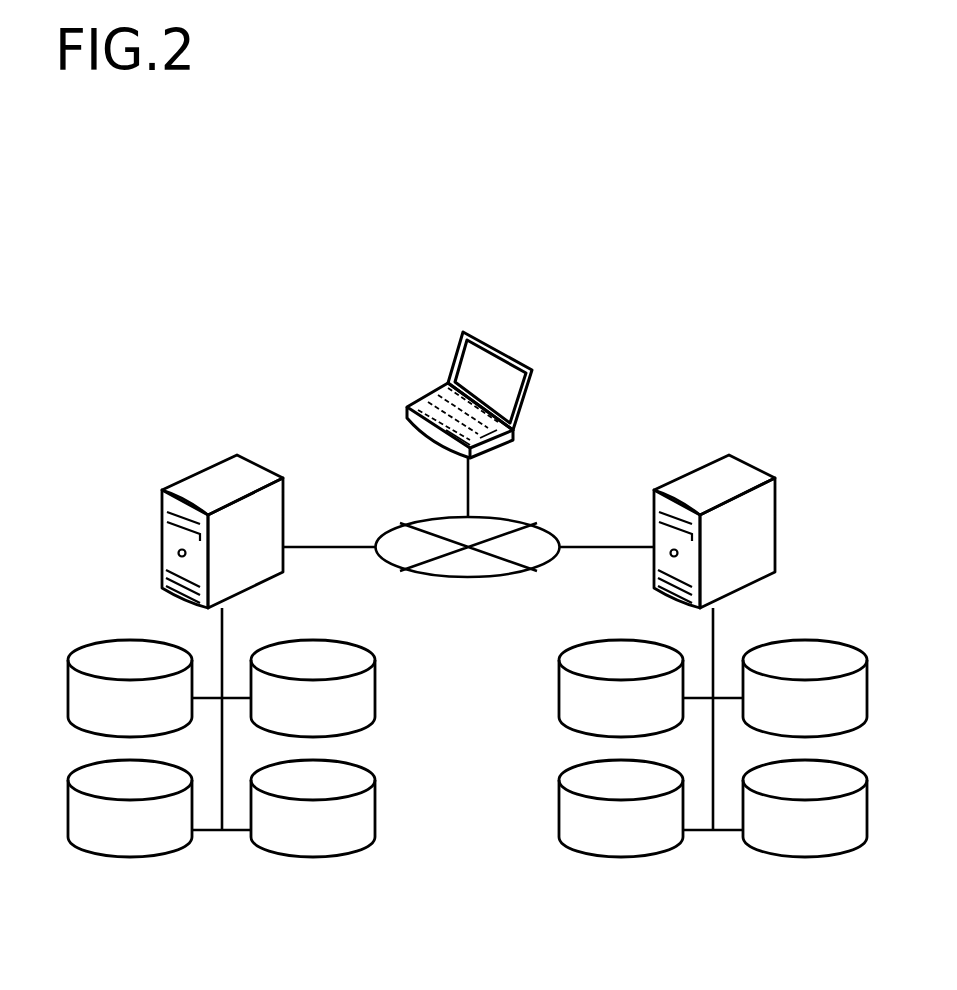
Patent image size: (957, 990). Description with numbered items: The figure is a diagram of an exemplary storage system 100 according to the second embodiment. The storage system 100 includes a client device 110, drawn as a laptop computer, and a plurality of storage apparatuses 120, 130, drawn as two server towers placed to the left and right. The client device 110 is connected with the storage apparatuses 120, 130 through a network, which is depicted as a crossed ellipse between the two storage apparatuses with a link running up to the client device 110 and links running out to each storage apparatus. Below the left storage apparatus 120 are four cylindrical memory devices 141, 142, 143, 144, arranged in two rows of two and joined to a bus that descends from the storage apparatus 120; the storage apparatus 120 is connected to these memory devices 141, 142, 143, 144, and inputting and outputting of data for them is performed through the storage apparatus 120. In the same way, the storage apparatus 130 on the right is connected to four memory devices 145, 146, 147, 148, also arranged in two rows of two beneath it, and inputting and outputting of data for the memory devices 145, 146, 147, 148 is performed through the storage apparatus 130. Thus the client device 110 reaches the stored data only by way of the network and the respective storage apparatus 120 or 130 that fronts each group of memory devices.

The storage system 100 is at (136, 300).
The client device 110 is at (490, 340).
The storage apparatus 120 is at (222, 487).
The storage apparatus 130 is at (728, 470).
The memory device 141 is at (115, 655).
The memory device 142 is at (132, 856).
The memory device 143 is at (326, 655).
The memory device 144 is at (317, 856).
The memory device 145 is at (605, 655).
The memory device 146 is at (622, 856).
The memory device 147 is at (818, 655).
The memory device 148 is at (807, 856).